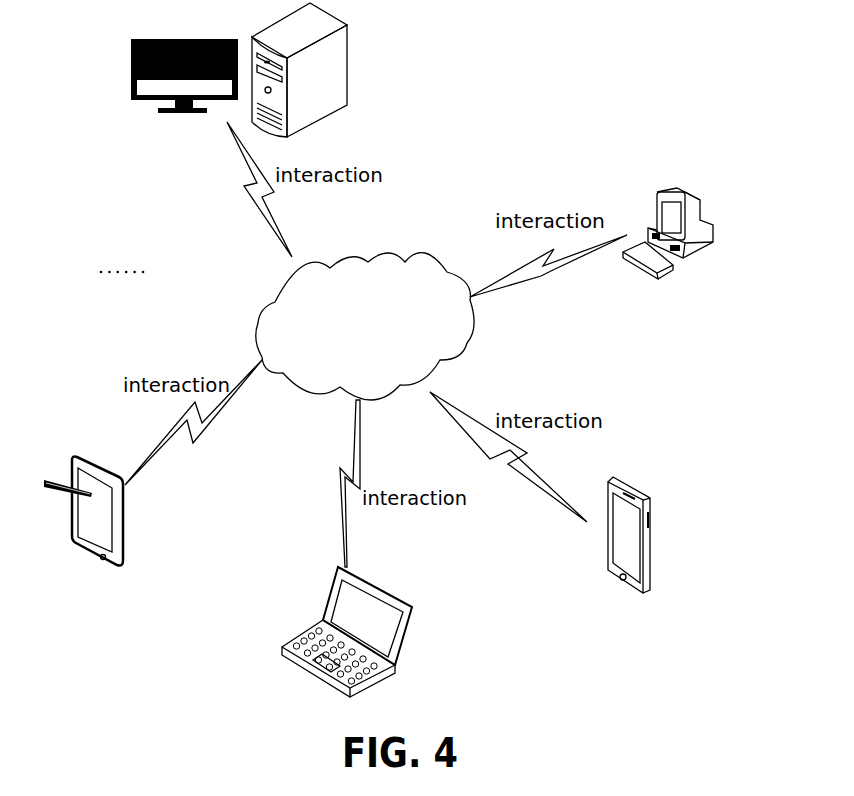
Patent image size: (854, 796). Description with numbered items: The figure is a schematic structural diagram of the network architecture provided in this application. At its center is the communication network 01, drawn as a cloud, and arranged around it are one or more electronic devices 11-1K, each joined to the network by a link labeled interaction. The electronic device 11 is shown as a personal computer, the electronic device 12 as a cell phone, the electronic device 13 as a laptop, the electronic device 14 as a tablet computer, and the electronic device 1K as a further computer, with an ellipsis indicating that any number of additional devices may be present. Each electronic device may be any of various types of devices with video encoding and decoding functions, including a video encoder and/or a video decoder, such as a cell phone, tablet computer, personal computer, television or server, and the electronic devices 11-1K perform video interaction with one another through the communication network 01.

The electronic device 1K is at (345, 58).
The communication network 01 is at (358, 257).
The electronic device 11 is at (698, 200).
The electronic device 12 is at (643, 498).
The electronic device 13 is at (373, 580).
The electronic device 14 is at (78, 452).